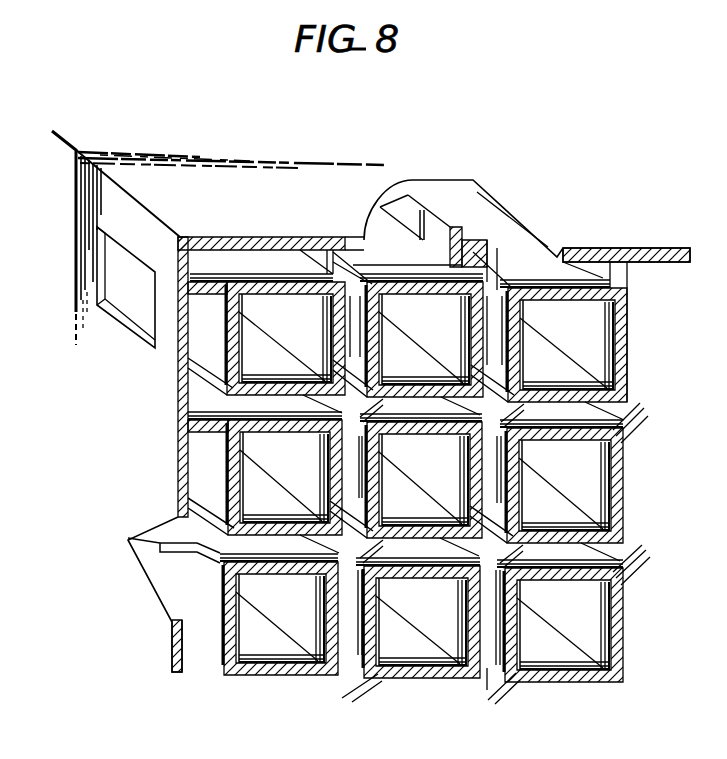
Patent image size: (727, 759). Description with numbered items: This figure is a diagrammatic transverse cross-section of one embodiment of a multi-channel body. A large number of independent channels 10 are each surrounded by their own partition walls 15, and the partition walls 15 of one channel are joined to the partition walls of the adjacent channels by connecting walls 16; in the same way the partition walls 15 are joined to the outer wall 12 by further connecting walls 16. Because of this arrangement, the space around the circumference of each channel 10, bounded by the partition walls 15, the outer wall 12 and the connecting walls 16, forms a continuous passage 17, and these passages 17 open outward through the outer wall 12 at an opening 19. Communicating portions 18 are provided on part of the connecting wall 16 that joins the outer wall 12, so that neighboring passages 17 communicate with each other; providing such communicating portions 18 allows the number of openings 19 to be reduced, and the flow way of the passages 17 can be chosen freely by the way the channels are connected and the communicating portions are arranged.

The channel 10 is at (593, 347).
The outer wall 12 is at (597, 248).
The partition wall 15 is at (628, 323).
The connecting wall 16 is at (447, 218).
The passage 17 is at (493, 295).
The communicating portion 18 is at (393, 220).
The opening 19 is at (120, 271).